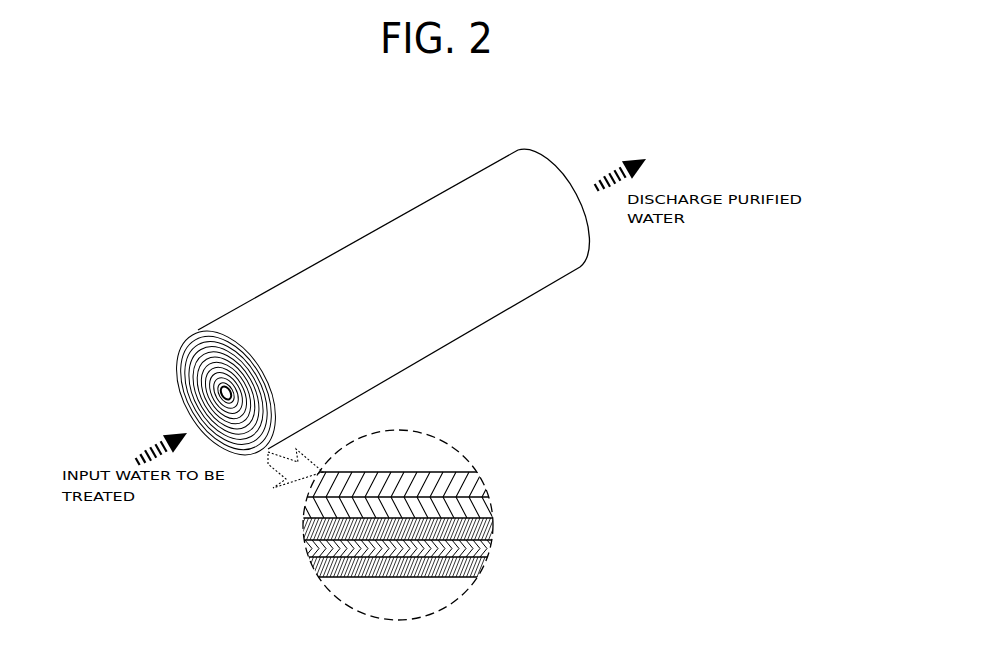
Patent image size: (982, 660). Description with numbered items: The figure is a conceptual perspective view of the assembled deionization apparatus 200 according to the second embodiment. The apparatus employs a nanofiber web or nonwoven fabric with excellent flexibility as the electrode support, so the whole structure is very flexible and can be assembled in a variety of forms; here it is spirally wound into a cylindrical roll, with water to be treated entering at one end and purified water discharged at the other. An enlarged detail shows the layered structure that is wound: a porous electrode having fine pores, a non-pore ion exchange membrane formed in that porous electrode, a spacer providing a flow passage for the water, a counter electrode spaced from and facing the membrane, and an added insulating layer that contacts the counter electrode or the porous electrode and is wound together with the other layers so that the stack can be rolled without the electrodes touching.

The deionization apparatus 200 is at (345, 223).